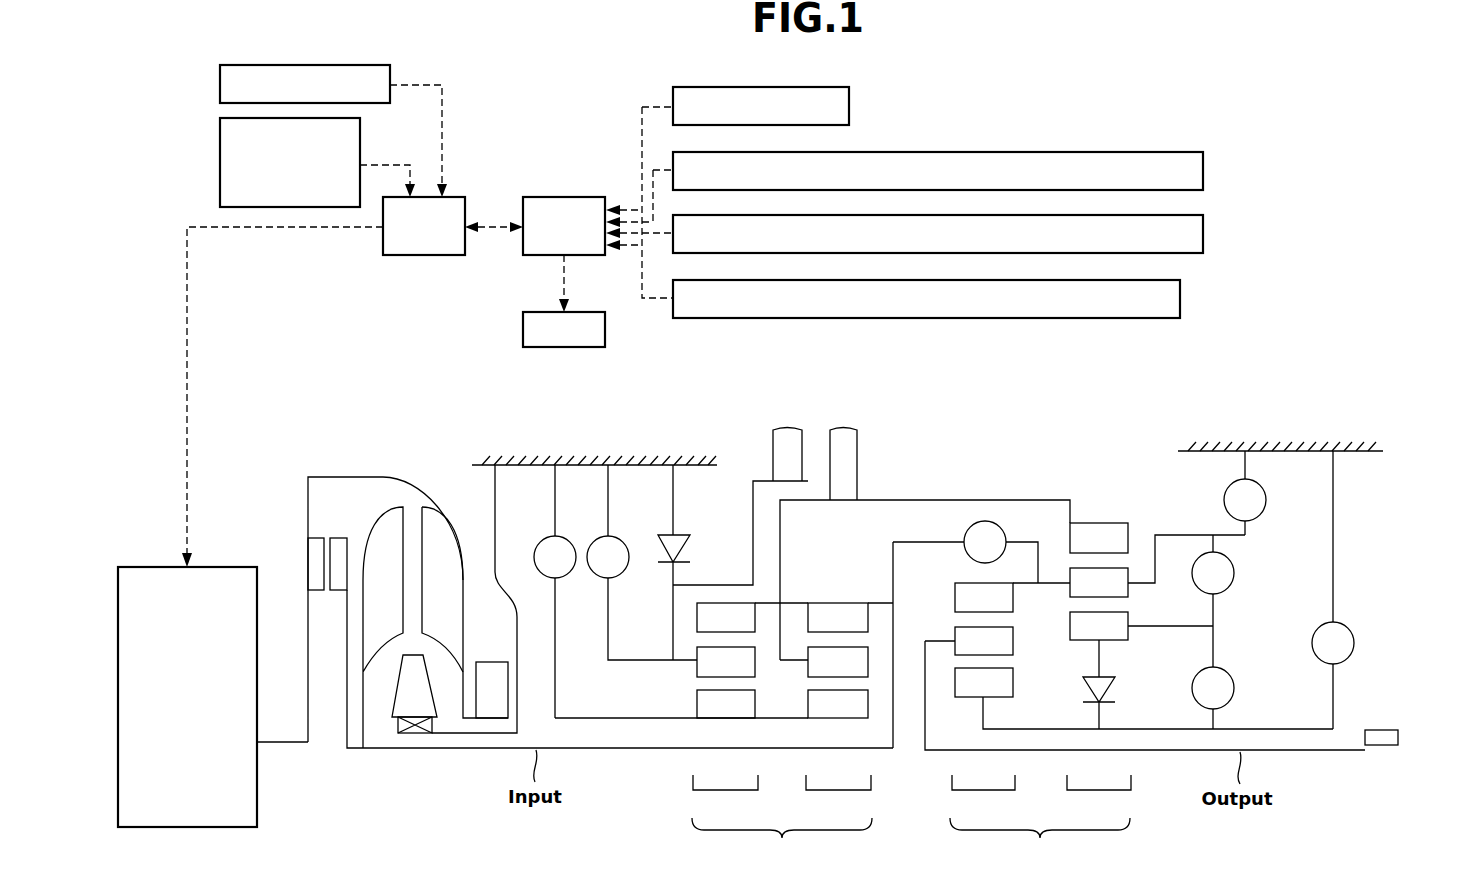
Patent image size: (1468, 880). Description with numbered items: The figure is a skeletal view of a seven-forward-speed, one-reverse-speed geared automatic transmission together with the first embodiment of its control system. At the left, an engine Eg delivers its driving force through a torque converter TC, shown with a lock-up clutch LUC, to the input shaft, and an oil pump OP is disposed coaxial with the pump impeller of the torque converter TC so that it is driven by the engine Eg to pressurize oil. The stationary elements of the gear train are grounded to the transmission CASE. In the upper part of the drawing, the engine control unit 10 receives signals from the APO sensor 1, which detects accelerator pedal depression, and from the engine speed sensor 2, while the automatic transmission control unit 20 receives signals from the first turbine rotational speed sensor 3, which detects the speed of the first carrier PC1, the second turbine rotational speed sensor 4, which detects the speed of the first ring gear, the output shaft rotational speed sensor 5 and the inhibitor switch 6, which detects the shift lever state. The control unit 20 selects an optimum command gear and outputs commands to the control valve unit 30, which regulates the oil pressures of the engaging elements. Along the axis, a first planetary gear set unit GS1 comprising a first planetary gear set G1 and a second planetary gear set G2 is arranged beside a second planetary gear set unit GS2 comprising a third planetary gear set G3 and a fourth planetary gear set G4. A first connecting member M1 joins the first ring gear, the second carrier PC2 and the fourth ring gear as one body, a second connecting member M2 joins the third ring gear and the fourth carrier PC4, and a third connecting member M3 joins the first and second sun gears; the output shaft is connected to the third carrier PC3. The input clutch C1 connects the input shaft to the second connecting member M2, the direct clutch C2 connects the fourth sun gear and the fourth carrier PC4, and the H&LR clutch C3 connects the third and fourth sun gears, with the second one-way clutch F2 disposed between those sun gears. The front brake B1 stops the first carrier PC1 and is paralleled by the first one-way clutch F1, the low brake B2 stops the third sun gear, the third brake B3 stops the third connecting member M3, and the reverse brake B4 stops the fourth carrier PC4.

The APO sensor 1 is at (220, 85).
The engine speed sensor 2 is at (220, 165).
The first turbine rotational speed sensor 3 is at (1203, 172).
The second turbine rotational speed sensor 4 is at (1203, 237).
The output shaft rotational speed sensor 5 is at (1180, 300).
The inhibitor switch 6 is at (849, 108).
The engine control unit 10 is at (425, 255).
The automatic transmission control unit 20 is at (562, 197).
The control valve unit 30 is at (523, 331).
The engine Eg is at (226, 566).
The torque converter TC is at (403, 458).
The lock-up clutch LUC is at (324, 522).
The oil pump OP is at (488, 662).
The transmission case CASE is at (565, 467).
The first one-way clutch F1 is at (688, 523).
The second one-way clutch F2 is at (1122, 695).
The first connecting member M1 is at (987, 500).
The second connecting member M2 is at (1038, 584).
The third connecting member M3 is at (785, 720).
The first carrier PC1 is at (683, 663).
The second carrier PC2 is at (790, 662).
The third carrier PC3 is at (940, 640).
The fourth carrier PC4 is at (1135, 584).
The front brake B1 is at (642, 562).
The low brake B2 is at (1333, 590).
The 2346 brake B3 is at (555, 591).
The reverse brake B4 is at (1245, 493).
The input clutch C1 is at (965, 634).
The direct clutch C2 is at (1213, 601).
The H&LR clutch C3 is at (1213, 698).
The first planetary gear set G1 is at (725, 712).
The second planetary gear set G2 is at (838, 712).
The third planetary gear set G3 is at (983, 702).
The fourth planetary gear set G4 is at (1099, 672).
The first planetary gear set unit GS1 is at (782, 840).
The second planetary gear set unit GS2 is at (1040, 840).